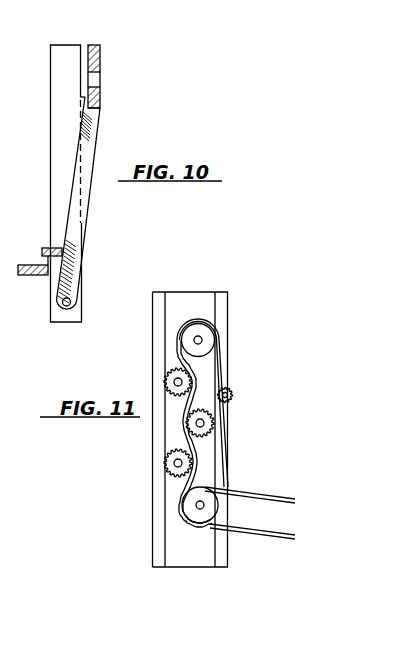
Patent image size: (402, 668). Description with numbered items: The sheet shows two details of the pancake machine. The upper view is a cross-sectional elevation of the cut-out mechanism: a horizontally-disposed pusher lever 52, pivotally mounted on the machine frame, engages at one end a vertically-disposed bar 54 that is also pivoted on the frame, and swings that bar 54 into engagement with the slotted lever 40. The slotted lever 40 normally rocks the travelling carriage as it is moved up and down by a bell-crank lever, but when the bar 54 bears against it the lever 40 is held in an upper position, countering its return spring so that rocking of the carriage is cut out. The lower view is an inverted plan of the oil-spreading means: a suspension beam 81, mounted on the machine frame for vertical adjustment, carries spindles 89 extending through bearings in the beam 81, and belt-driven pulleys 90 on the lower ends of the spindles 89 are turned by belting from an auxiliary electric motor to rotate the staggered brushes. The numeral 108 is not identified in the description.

In FIG. 10, the slotted lever 40 is at (103, 58).
In FIG. 10, the vertically-disposed bar 54 is at (97, 132).
In FIG. 10, the pusher lever 52 is at (42, 251).
In FIG. 11, the suspension beam 81 is at (204, 301).
In FIG. 11, the spindles 89 is at (172, 382).
In FIG. 11, the belt-driven pulleys 90 is at (206, 340).
In FIG. 11, the guide plate 108 is at (147, 477).